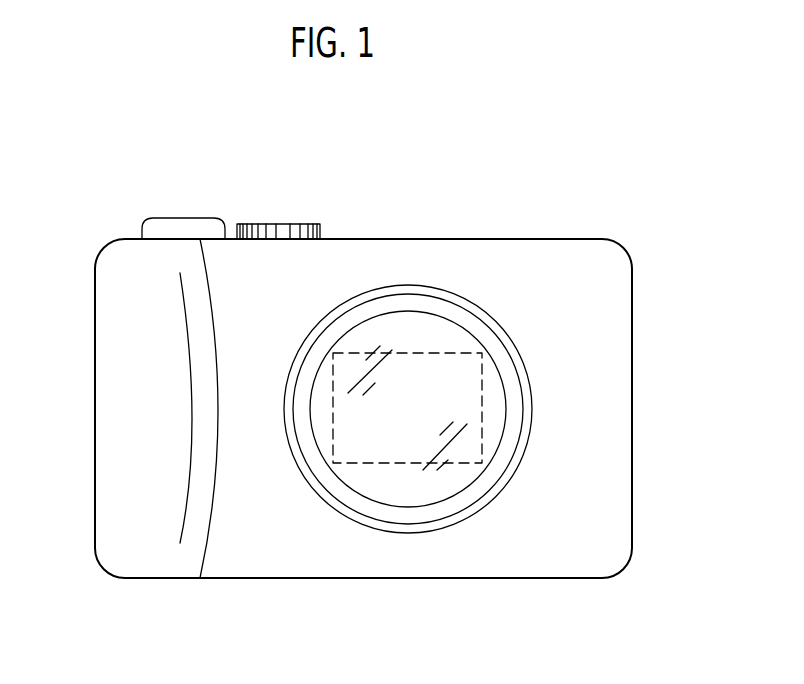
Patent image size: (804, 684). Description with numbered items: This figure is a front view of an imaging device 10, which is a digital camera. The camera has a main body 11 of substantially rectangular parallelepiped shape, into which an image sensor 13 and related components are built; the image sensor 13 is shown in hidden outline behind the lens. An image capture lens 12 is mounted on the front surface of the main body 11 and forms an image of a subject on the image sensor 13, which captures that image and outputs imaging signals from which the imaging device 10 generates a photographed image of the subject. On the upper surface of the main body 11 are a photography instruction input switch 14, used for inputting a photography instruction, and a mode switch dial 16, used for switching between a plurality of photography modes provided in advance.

The imaging device 10 is at (70, 596).
The main body 11 is at (618, 318).
The image capture lens 12 is at (395, 483).
The image sensor 13 is at (468, 412).
The photography instruction input switch 14 is at (175, 222).
The mode switch dial 16 is at (295, 225).